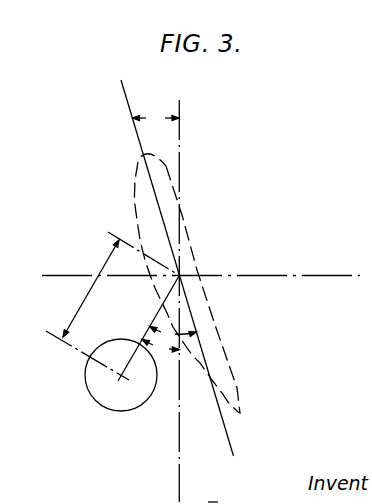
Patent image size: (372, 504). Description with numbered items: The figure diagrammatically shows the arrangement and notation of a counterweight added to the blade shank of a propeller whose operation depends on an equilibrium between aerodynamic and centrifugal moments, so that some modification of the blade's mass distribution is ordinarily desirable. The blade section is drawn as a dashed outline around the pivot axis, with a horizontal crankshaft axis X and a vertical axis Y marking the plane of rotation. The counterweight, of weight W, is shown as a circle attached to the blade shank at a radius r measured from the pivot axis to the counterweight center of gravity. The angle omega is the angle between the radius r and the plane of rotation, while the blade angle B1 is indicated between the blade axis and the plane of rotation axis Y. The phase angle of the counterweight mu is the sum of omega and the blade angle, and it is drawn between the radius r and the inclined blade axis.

The weight of counterweight W is at (132, 344).
The radius of counterweight center of gravity r is at (112, 306).
The crankshaft axis X is at (192, 272).
The plane of rotation axis Y is at (182, 290).
The blade pitch angle beta-1 B1 is at (156, 123).
The phase angle of counterweight mu is at (173, 331).
The angle between radius and plane of rotation omega is at (160, 348).